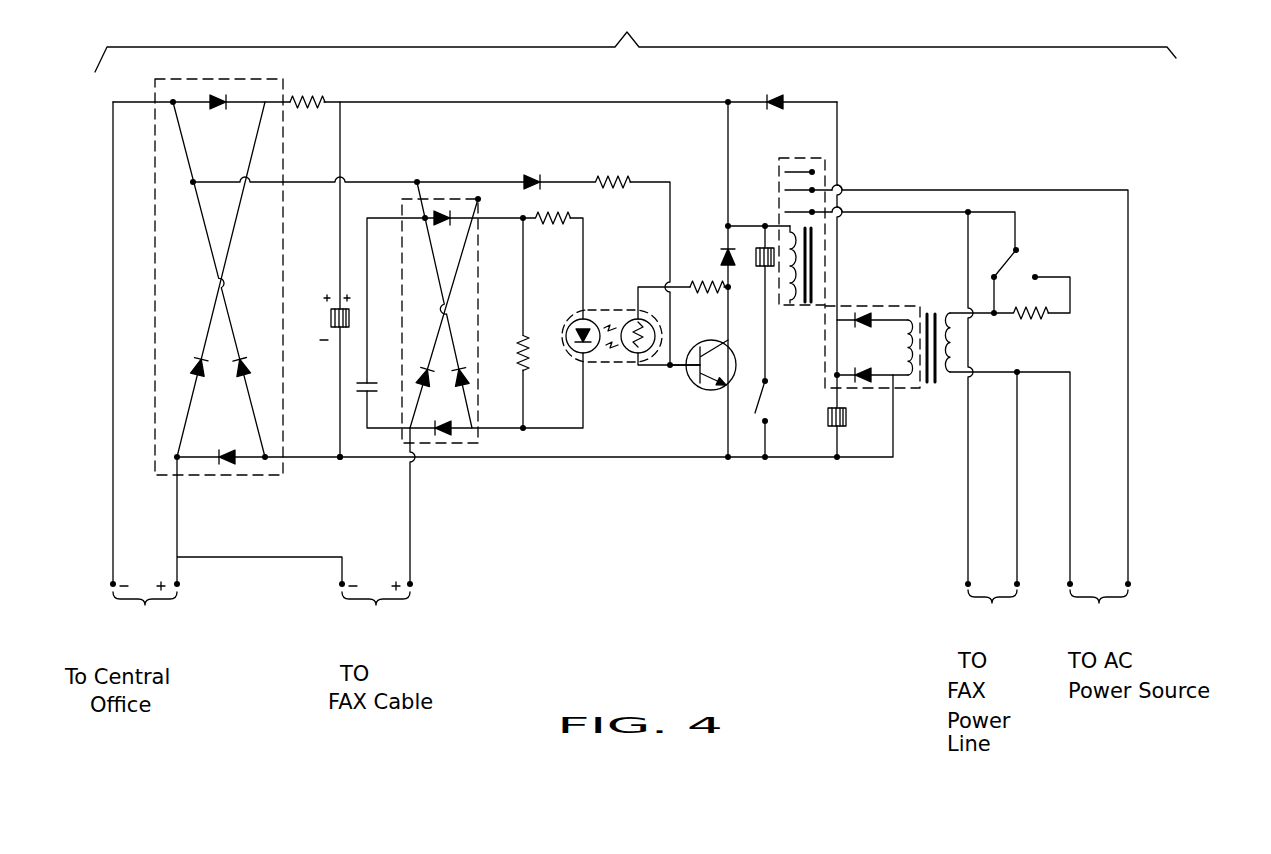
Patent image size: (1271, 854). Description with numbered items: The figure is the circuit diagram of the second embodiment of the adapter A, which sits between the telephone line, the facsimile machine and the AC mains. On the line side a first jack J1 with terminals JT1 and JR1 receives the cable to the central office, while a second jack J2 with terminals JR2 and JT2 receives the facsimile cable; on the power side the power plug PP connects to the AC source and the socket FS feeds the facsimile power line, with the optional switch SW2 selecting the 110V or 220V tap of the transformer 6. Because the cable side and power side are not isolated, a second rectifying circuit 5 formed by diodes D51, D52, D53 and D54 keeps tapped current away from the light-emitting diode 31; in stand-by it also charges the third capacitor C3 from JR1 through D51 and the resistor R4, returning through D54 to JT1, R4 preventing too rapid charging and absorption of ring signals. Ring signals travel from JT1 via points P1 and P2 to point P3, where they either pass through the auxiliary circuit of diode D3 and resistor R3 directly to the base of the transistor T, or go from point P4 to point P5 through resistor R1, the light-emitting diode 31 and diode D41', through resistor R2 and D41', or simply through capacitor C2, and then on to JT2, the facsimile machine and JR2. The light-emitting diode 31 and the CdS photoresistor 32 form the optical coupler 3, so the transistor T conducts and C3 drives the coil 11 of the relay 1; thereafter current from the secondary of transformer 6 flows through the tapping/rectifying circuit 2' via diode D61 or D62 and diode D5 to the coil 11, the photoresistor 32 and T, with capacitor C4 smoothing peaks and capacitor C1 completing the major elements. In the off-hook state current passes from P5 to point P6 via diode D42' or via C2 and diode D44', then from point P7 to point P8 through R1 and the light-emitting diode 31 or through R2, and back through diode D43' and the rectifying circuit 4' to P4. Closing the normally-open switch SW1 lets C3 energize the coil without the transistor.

The adapter A is at (635, 40).
The second rectifying circuit 5 is at (193, 249).
The rectifying circuit 4' is at (436, 310).
The optical coupler 3 is at (629, 339).
The LED 31 is at (565, 369).
The CdS photoresistor 32 is at (624, 350).
The relay 1 is at (802, 233).
The coil 11 is at (795, 304).
The transformer 6 is at (887, 340).
The tapping/rectifying circuit 2' is at (869, 444).
The point P1 is at (173, 102).
The point P2 is at (193, 183).
The point P3 is at (417, 182).
The point P4 is at (418, 216).
The point P5 is at (342, 458).
The point P6 is at (478, 199).
The point P7 is at (522, 218).
The point P8 is at (525, 430).
The diode D51 is at (200, 358).
The diode D52 is at (220, 97).
The diode D53 is at (243, 358).
The diode D54 is at (225, 447).
The diode D41' is at (472, 459).
The diode D42' is at (407, 348).
The diode D43' is at (482, 352).
The diode D44' is at (439, 174).
The diode D3 is at (530, 177).
The diode D5 is at (775, 94).
The diode D61 is at (860, 312).
The diode D62 is at (880, 382).
The resistor R1 is at (550, 224).
The resistor R2 is at (536, 323).
The resistor R3 is at (617, 178).
The resistor R4 is at (310, 99).
The capacitor C1 is at (760, 247).
The capacitor C2 is at (362, 395).
The third capacitor C3 is at (327, 327).
The capacitor C4 is at (828, 422).
The normally-open switch SW1 is at (762, 400).
The switch SW2 is at (1022, 254).
The transistor T is at (692, 386).
The 110V tap 110V is at (994, 245).
The 220V tap 220V is at (1054, 268).
The terminal JT1 is at (90, 615).
The terminal JR1 is at (199, 615).
The first jack J1 is at (142, 643).
The terminal JR2 is at (338, 615).
The terminal JT2 is at (415, 615).
The second jack J2 is at (371, 643).
The socket FS is at (987, 627).
The power plug PP is at (1092, 627).